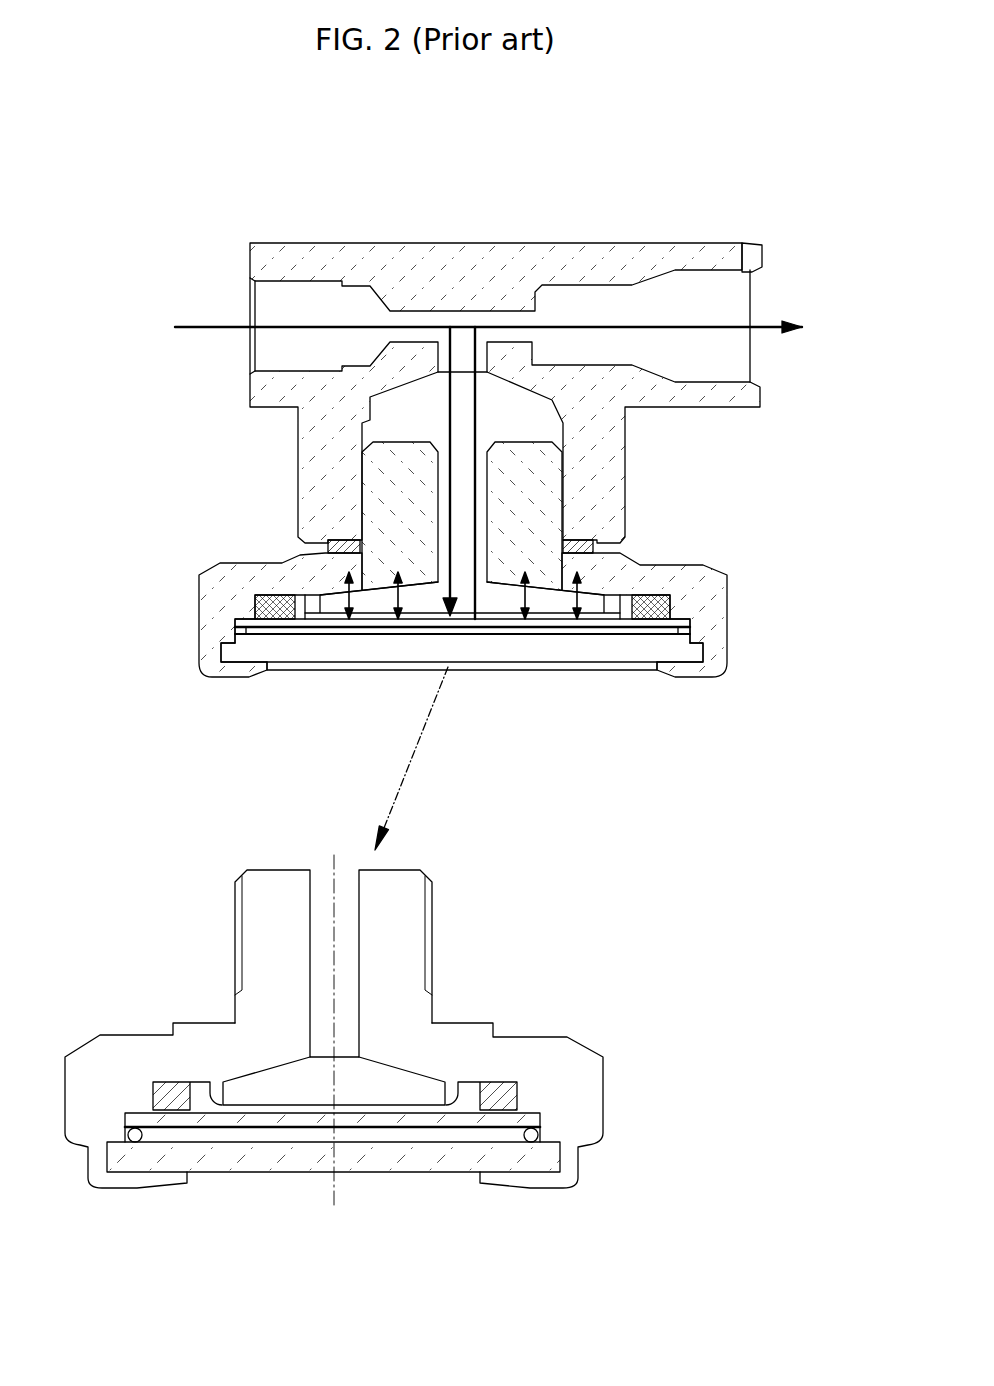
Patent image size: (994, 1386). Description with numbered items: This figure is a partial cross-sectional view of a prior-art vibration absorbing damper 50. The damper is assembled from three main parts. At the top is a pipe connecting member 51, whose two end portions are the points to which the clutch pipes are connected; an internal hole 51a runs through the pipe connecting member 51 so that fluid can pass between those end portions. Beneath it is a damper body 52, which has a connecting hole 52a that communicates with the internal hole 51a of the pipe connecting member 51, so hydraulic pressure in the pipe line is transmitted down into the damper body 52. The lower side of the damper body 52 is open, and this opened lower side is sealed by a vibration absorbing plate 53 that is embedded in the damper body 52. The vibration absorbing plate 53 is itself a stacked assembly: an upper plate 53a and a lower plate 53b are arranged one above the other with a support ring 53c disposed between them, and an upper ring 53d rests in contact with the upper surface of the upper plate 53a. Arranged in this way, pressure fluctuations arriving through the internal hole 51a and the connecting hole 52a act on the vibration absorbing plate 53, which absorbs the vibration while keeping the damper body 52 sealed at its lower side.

The vibration absorbing damper 50 is at (632, 172).
The pipe connecting member 51 is at (362, 253).
The internal hole 51a is at (491, 306).
The damper body 52 is at (548, 484).
The connecting hole 52a is at (312, 953).
The vibration absorbing plate 53 is at (722, 1003).
The upper plate 53a is at (547, 1115).
The lower plate 53b is at (558, 1160).
The support ring 53c is at (546, 1130).
The upper ring 53d is at (502, 1086).